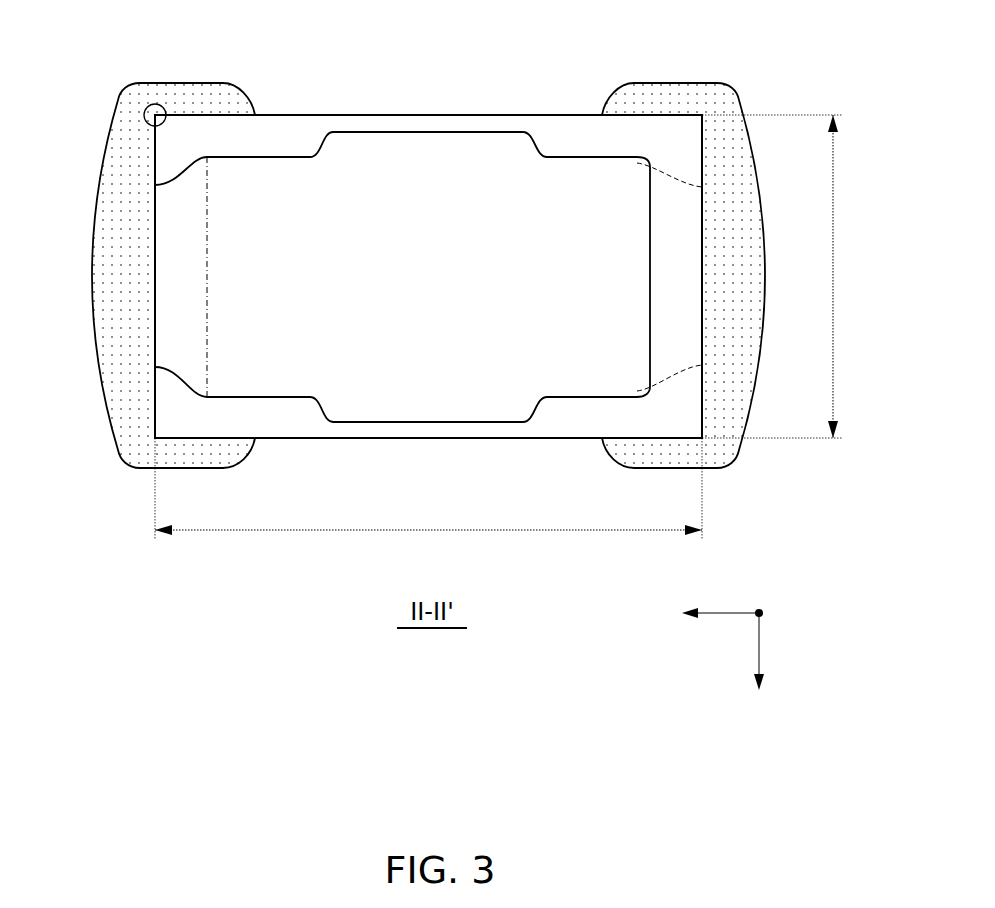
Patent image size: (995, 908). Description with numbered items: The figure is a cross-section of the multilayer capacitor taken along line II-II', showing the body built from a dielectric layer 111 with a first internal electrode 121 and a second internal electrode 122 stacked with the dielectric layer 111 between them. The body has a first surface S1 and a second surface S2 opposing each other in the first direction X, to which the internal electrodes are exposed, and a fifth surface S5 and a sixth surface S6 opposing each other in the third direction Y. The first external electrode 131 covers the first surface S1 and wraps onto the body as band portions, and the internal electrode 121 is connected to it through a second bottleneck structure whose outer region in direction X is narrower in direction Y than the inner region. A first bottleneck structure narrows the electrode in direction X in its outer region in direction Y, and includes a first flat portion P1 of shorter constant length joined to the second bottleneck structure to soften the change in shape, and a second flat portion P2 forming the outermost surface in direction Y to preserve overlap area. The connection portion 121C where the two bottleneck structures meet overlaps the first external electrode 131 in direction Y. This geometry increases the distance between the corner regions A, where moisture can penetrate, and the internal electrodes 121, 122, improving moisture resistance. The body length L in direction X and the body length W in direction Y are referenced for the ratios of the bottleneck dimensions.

The dielectric layer 111 is at (358, 113).
The first internal electrode 121 is at (371, 404).
The connection portion 121C is at (207, 232).
The second internal electrode 122 is at (690, 238).
The first external electrode 131 is at (185, 95).
The corner region A is at (153, 104).
The first flat portion P1 is at (272, 148).
The second flat portion P2 is at (490, 124).
The first surface S1 is at (145, 396).
The second surface S2 is at (715, 403).
The fifth surface S5 is at (418, 100).
The sixth surface S6 is at (482, 452).
The length of the body in the third direction W is at (783, 276).
The length of the body in the first direction L is at (428, 500).
The first direction X is at (710, 613).
The third direction Y is at (759, 664).